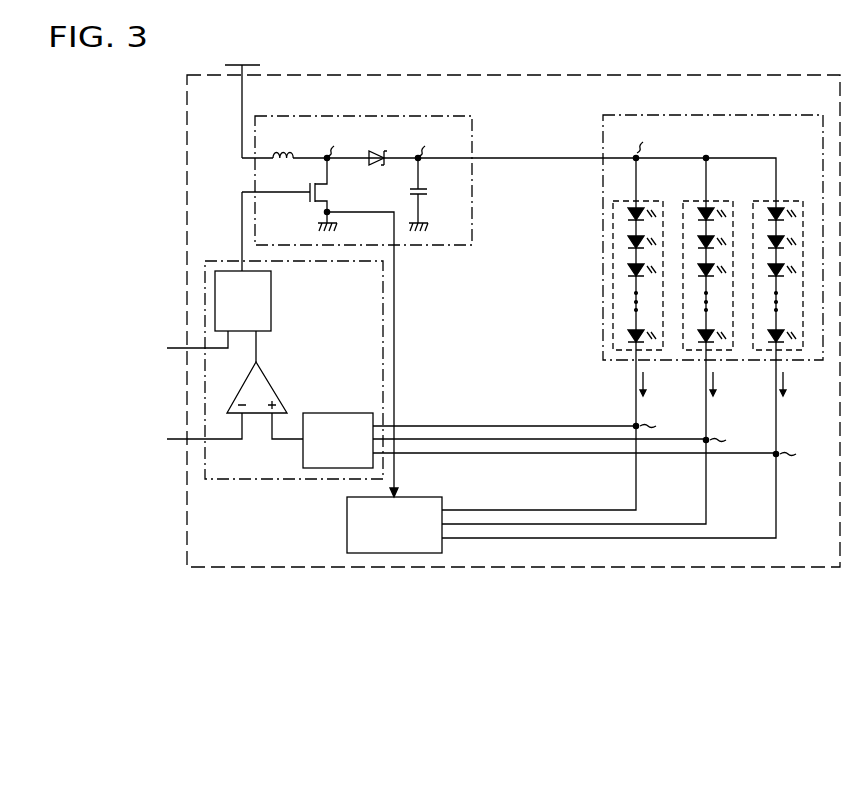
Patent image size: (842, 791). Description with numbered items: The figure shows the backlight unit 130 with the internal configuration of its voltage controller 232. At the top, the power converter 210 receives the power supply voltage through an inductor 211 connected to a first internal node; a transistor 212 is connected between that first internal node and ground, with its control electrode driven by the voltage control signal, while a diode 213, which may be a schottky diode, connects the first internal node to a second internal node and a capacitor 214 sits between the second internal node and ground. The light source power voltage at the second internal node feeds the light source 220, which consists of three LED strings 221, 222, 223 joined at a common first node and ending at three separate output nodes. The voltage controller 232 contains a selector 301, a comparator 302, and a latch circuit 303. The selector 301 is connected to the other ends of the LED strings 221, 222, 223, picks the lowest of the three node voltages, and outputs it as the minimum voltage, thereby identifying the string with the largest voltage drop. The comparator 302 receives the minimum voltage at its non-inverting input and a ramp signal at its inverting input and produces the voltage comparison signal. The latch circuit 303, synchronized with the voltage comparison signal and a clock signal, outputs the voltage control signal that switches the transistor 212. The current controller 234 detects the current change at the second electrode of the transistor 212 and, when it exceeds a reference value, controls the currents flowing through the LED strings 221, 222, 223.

The backlight unit 130 is at (703, 75).
The power converter 210 is at (424, 115).
The inductor 211 is at (283, 148).
The transistor 212 is at (297, 194).
The diode 213 is at (379, 145).
The capacitor 214 is at (427, 192).
The light source 220 is at (771, 115).
The first LED string 221 is at (653, 199).
The second LED string 222 is at (723, 199).
The third LED string 223 is at (793, 199).
The voltage controller 232 is at (252, 481).
The selector 301 is at (349, 412).
The comparator 302 is at (272, 381).
The latch circuit 303 is at (272, 298).
The current controller 234 is at (415, 496).